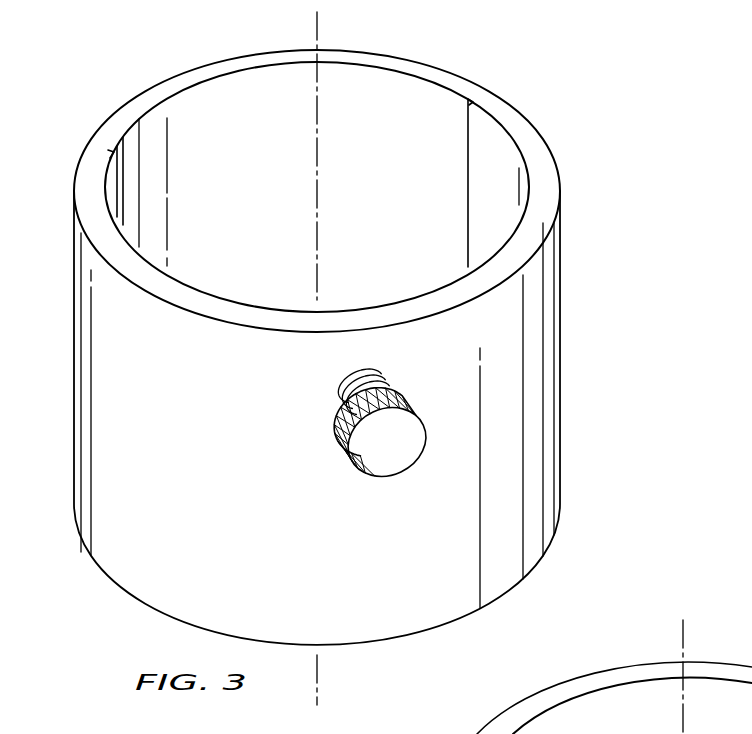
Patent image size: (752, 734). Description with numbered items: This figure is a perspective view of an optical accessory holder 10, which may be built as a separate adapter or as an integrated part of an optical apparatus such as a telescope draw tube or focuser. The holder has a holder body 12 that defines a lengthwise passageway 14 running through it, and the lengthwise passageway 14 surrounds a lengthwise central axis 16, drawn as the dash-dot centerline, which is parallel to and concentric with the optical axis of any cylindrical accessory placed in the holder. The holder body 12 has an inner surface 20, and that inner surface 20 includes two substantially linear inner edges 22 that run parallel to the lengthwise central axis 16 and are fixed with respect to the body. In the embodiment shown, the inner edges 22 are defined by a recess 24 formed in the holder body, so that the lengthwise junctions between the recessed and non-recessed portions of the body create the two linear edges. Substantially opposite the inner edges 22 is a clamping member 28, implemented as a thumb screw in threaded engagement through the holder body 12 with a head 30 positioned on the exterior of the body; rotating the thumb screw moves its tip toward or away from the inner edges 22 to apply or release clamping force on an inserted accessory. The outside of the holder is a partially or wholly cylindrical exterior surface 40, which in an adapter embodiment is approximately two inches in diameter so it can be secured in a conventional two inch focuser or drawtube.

The optical accessory holder 10 is at (369, 330).
The holder body 12 is at (298, 347).
The lengthwise passageway 14 is at (343, 164).
The lengthwise central axis 16 is at (317, 192).
The inner surface 20 is at (508, 195).
The inner edges 22 is at (118, 172).
The recess 24 is at (178, 92).
The clamping member 28 is at (351, 449).
The head 30 is at (390, 463).
The cylindrical exterior surface 40 is at (130, 572).